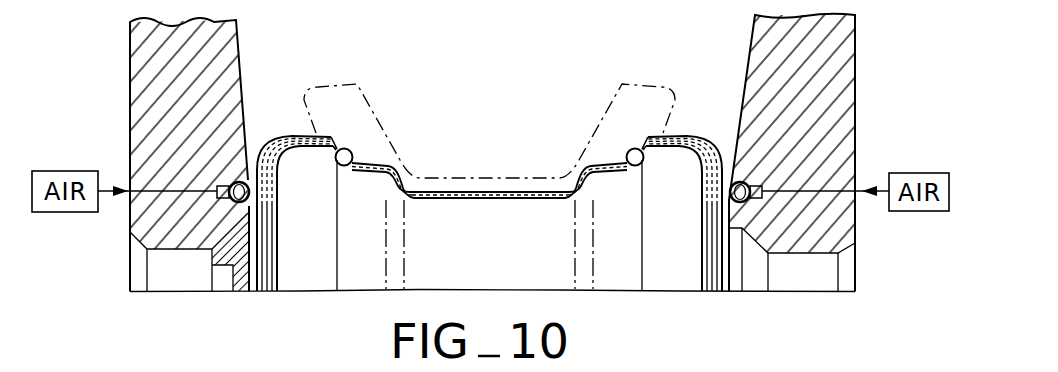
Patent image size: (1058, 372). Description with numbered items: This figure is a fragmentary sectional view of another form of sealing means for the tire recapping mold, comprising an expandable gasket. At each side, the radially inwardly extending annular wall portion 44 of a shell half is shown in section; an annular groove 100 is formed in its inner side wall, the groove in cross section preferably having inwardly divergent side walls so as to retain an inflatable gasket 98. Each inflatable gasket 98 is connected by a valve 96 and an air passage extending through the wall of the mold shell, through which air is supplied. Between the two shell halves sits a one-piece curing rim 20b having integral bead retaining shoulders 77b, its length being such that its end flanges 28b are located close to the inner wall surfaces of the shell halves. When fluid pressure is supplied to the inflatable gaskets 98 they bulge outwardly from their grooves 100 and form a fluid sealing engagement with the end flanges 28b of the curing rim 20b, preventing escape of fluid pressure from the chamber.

The annular wall portion 44 is at (148, 83).
The annular groove 100 is at (218, 186).
The valve 96 is at (219, 196).
The inflatable gasket 98 is at (268, 186).
The end flanges 28b is at (325, 241).
The bead retaining shoulders 77b is at (362, 168).
The one-piece curing rim 20b is at (493, 199).